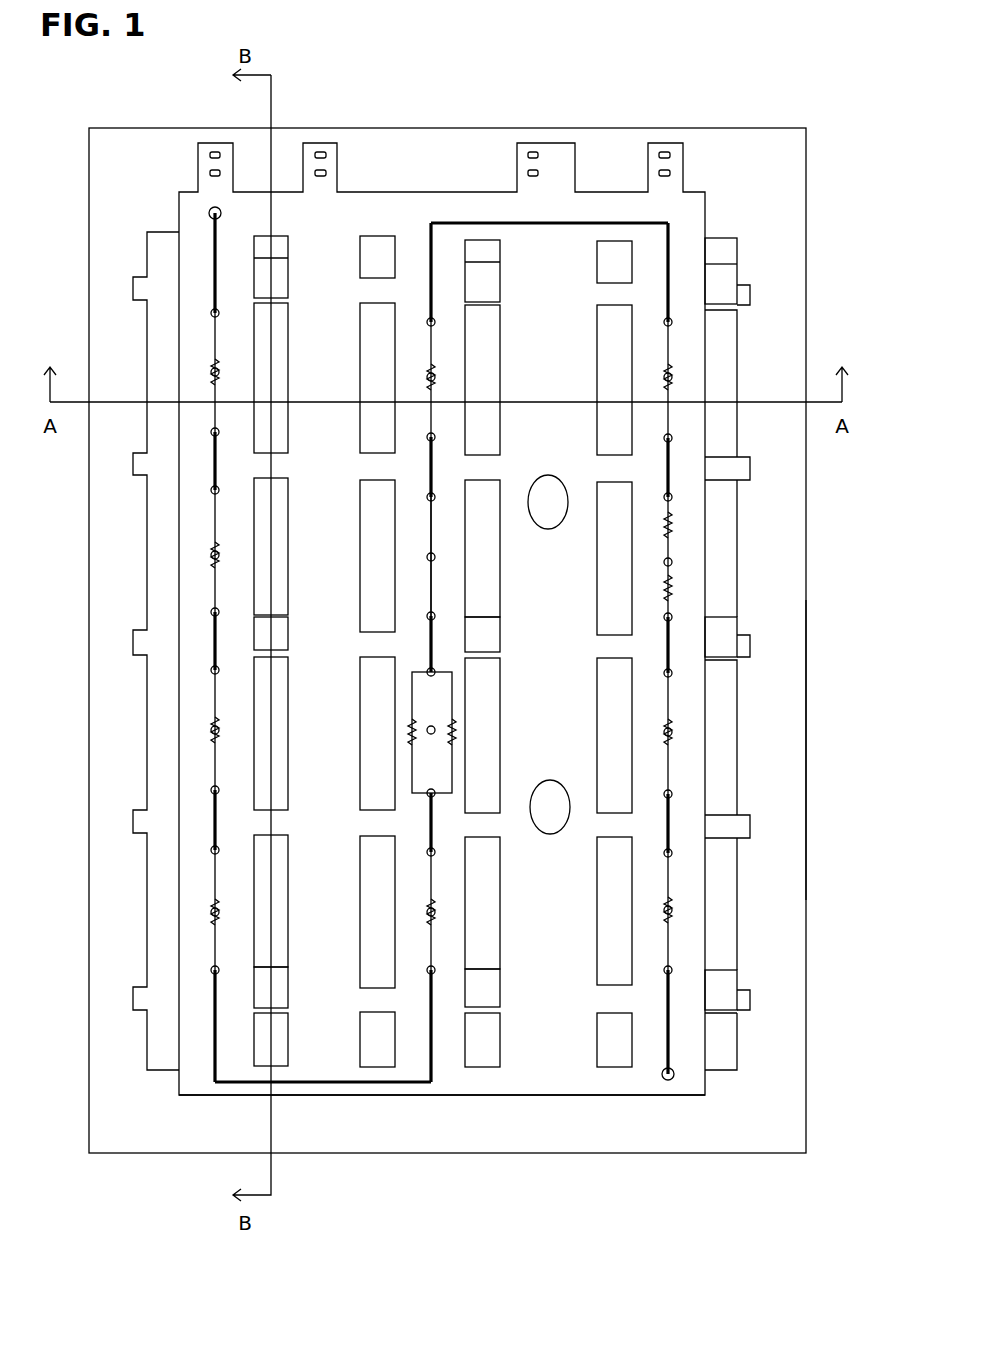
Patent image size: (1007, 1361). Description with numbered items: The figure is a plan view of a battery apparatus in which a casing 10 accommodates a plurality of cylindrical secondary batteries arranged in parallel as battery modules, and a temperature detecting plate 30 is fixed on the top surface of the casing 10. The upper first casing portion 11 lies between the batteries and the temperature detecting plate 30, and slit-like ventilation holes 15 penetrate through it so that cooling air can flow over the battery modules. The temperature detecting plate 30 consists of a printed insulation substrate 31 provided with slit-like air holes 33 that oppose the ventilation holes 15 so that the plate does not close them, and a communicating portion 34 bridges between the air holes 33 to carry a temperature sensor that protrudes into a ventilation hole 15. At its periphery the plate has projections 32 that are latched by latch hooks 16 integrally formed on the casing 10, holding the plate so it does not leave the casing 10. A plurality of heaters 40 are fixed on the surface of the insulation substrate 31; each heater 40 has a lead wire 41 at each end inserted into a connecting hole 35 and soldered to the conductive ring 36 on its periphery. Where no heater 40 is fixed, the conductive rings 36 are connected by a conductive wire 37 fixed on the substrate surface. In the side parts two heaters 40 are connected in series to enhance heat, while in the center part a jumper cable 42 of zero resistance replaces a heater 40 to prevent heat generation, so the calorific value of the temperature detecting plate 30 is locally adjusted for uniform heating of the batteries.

The casing 10 is at (822, 560).
The first casing portion 11 is at (790, 763).
The ventilation hole 15 is at (152, 737).
The latch hook 16 is at (285, 283).
The temperature detecting plate 30 is at (562, 1137).
The insulation substrate 31 is at (535, 1075).
The projection 32 is at (748, 302).
The air hole 33 is at (353, 360).
The communicating portion 34 is at (272, 298).
The connecting hole 35 is at (205, 500).
The conductive ring 36 is at (220, 492).
The conductive wire 37 is at (540, 225).
The heater 40 is at (215, 560).
The lead wire 41 is at (215, 528).
The jumper cable 42 is at (432, 535).